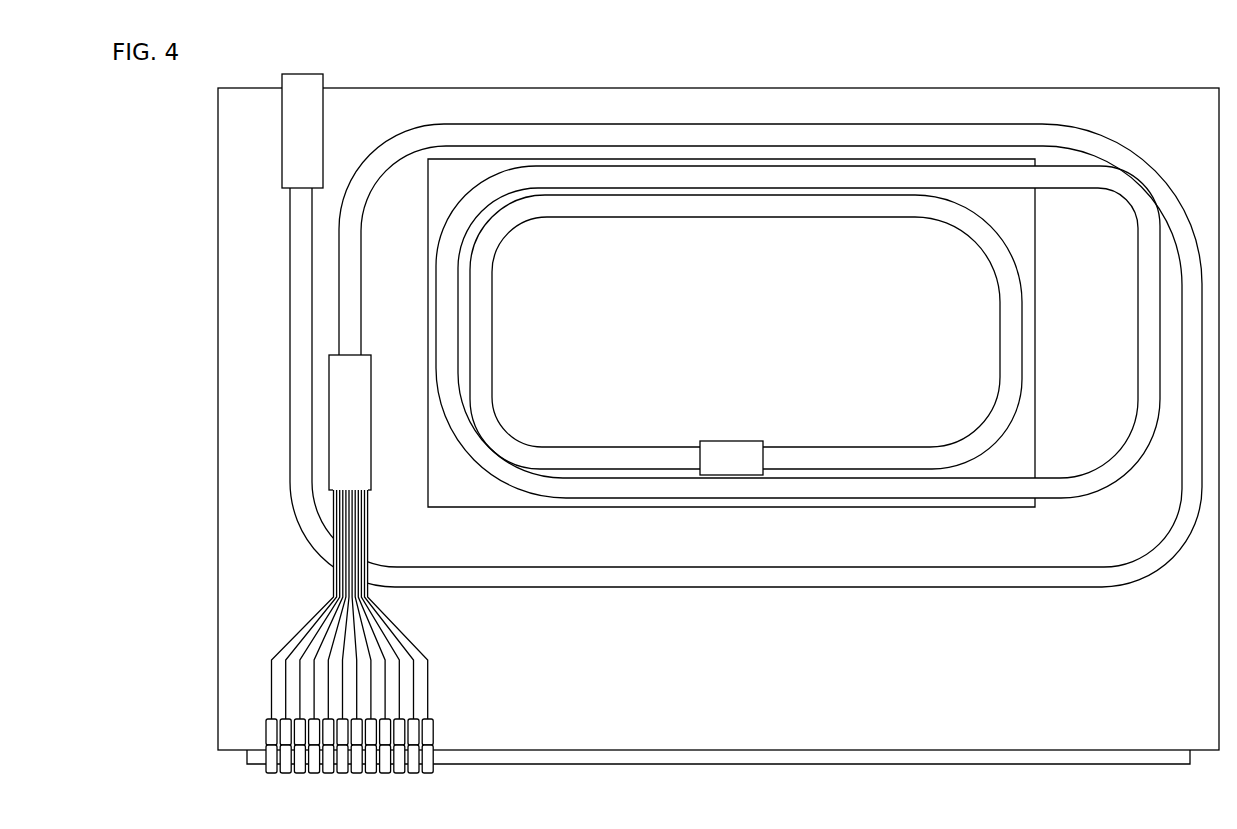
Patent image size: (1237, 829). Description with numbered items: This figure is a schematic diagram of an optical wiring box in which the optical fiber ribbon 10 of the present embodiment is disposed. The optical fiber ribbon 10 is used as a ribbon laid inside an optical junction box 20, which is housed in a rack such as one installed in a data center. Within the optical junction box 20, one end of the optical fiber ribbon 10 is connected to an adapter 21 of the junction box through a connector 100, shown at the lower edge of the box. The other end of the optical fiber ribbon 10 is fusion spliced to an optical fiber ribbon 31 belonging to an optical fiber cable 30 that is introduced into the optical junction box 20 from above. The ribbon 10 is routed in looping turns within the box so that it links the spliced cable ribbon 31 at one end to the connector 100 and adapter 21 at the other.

The optical fiber ribbon 10 is at (786, 124).
The optical junction box 20 is at (1010, 79).
The adapter 21 is at (437, 768).
The optical fiber cable 30 is at (323, 118).
The optical fiber ribbon of the optical fiber cable 31 is at (291, 247).
The connector 100 is at (432, 729).